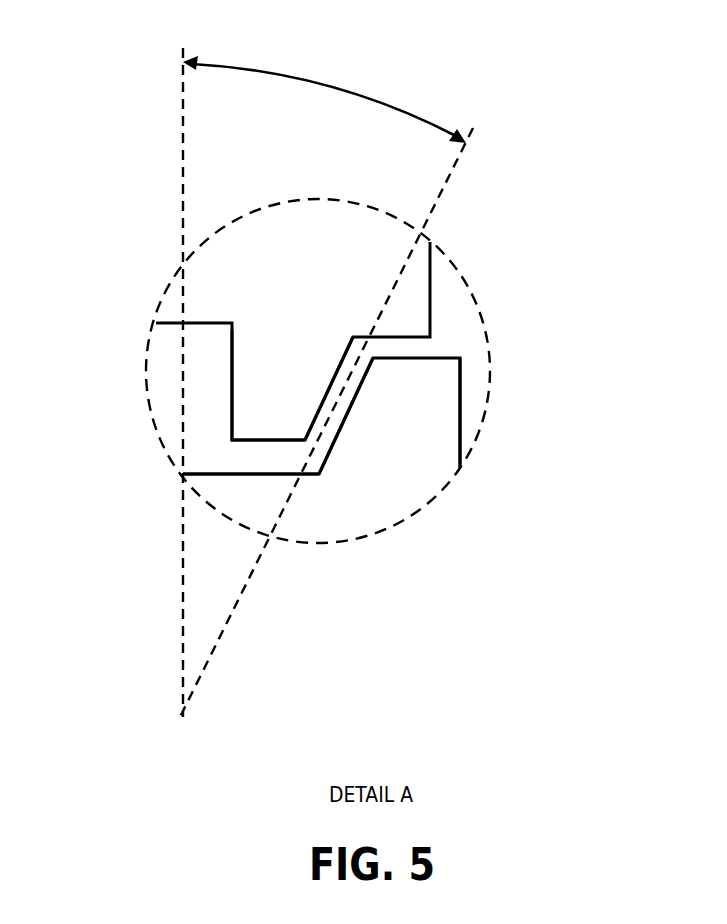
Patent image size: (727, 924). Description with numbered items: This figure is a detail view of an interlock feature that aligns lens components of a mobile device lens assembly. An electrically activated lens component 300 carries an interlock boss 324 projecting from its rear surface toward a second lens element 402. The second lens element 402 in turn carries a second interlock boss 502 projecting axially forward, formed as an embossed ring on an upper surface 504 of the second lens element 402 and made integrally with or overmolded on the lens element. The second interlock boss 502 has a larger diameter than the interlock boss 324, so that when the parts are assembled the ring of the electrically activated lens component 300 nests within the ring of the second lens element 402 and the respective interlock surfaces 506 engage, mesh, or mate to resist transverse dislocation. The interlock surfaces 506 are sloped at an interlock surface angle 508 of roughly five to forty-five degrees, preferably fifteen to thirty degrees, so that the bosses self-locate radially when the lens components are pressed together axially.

The electrically activated lens component 300 is at (343, 260).
The interlock boss 324 is at (262, 382).
The second lens element 402 is at (343, 520).
The second interlock boss 502 is at (435, 423).
The upper surface 504 is at (210, 473).
The interlock surfaces 506 is at (330, 417).
The interlock surface angle 508 is at (316, 78).